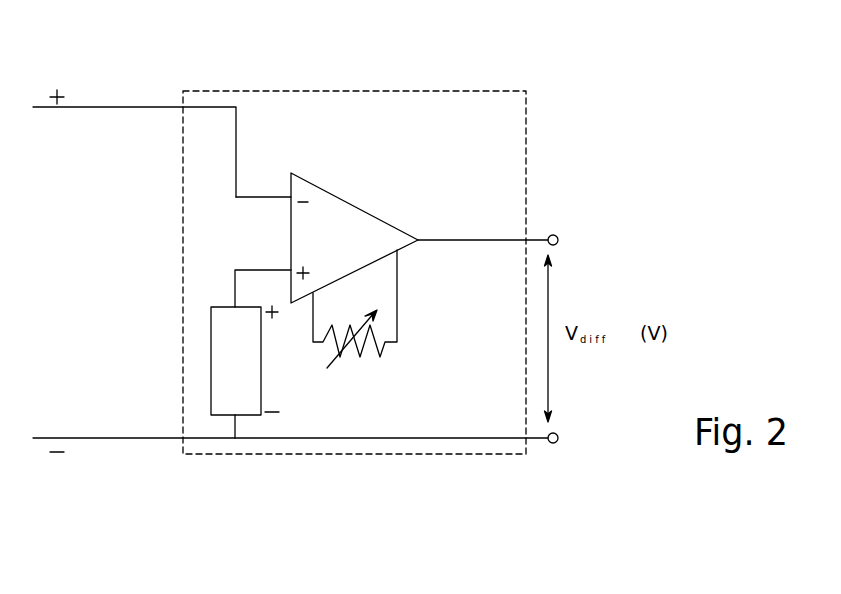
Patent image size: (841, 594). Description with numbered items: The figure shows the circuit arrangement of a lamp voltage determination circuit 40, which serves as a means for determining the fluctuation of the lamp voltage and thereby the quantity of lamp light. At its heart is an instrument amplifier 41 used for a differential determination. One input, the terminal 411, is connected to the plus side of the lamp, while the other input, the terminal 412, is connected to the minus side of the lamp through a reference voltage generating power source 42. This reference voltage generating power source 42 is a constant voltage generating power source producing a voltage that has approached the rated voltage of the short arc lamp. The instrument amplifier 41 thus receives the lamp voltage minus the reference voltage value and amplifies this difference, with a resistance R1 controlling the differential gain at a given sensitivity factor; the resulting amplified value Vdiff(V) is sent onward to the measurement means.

The lamp voltage determination circuit 40 is at (292, 92).
The instrument amplifier 41 is at (327, 187).
The terminal 411 is at (248, 197).
The terminal 412 is at (237, 270).
The reference voltage generating power source 42 is at (210, 414).
The resistance R1 is at (351, 326).